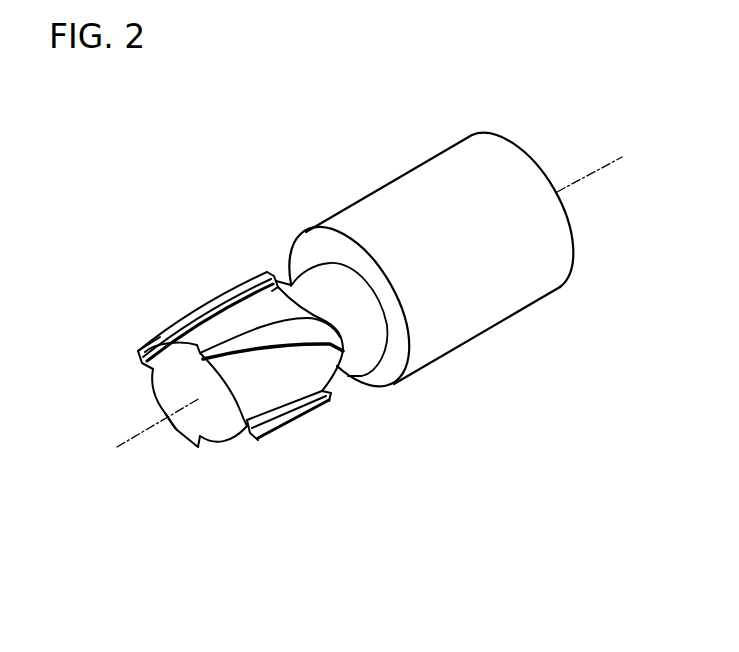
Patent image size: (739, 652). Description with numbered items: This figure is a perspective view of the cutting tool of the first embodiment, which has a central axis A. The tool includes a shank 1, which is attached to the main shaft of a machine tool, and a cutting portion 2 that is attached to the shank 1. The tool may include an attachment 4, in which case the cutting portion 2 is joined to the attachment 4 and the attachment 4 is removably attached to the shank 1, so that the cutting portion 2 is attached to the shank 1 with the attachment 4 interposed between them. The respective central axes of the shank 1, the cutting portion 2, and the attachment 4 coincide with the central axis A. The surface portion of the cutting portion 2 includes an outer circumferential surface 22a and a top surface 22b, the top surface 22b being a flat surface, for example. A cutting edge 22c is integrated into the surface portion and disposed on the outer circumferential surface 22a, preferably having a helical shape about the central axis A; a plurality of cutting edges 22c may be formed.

The shank 1 is at (473, 323).
The cutting portion 2 is at (204, 366).
The attachment 4 is at (353, 347).
The outer circumferential surface 22a is at (233, 305).
The top surface 22b is at (163, 387).
The cutting edge 22c is at (160, 332).
The central axis A is at (360, 312).